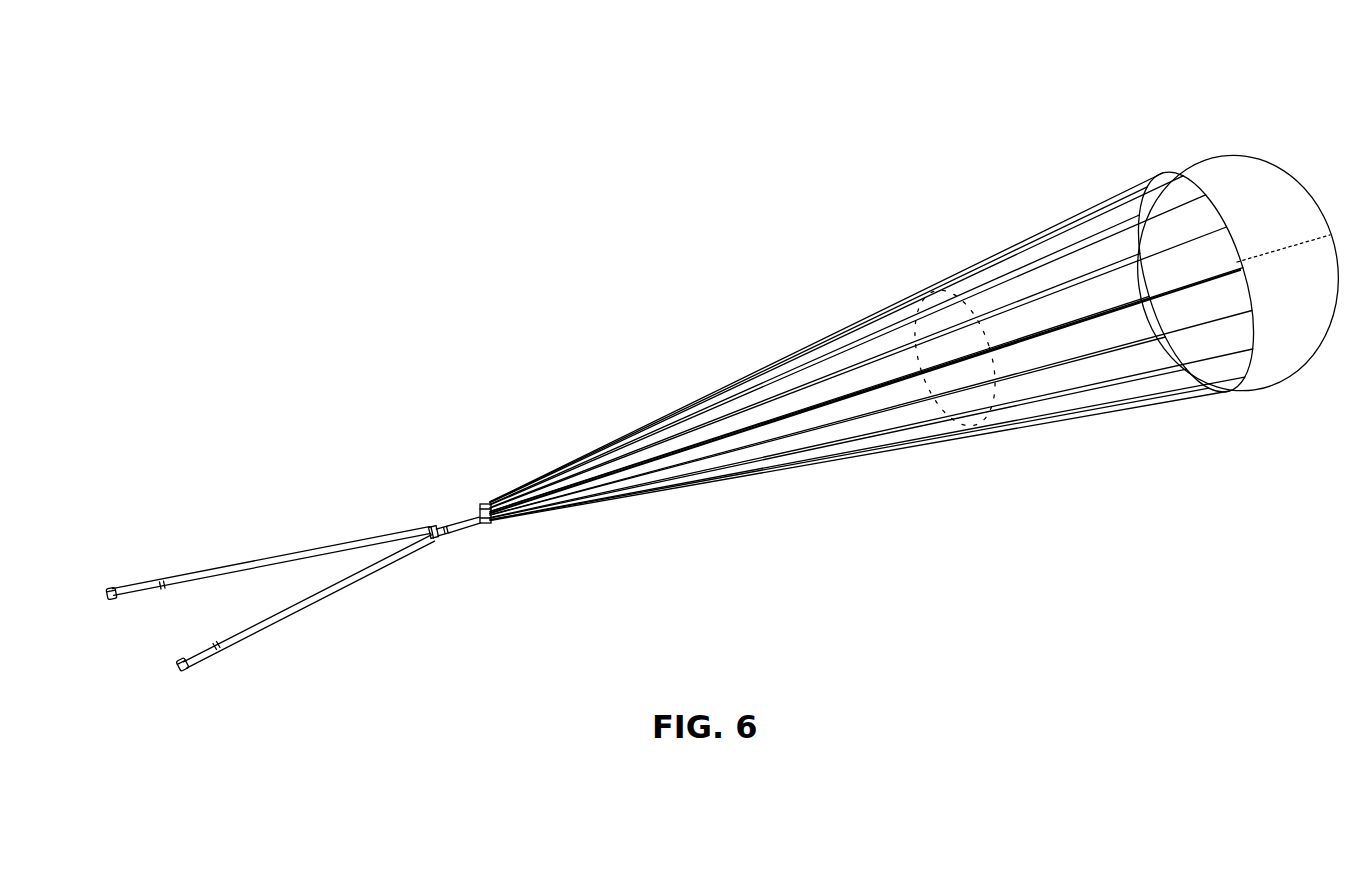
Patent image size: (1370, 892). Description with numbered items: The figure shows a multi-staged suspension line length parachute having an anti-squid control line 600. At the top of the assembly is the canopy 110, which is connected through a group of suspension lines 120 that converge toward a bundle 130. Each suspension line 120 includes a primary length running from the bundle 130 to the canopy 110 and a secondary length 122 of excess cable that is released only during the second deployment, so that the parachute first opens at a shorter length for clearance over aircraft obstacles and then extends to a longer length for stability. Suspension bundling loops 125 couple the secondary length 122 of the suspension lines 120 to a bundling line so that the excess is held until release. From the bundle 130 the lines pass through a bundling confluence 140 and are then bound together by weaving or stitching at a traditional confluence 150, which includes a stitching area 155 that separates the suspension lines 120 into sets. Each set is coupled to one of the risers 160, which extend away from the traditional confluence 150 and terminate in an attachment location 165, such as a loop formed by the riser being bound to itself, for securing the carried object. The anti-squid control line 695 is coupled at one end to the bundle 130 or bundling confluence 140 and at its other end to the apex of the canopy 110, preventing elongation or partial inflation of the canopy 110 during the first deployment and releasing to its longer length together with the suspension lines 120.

The multi-staged suspension line length parachute having an anti-squid control line 600 is at (1022, 78).
The canopy 110 is at (1197, 178).
The anti-squid control line 695 is at (1296, 252).
The suspension line 120 is at (850, 289).
The secondary length 122 is at (738, 378).
The suspension bundling loop 125 is at (925, 296).
The bundle 130 is at (510, 490).
The bundling confluence 140 is at (466, 525).
The traditional confluence 150 is at (442, 532).
The stitching area 155 is at (430, 526).
The risers 160 is at (255, 562).
The attachment location 165 is at (110, 587).